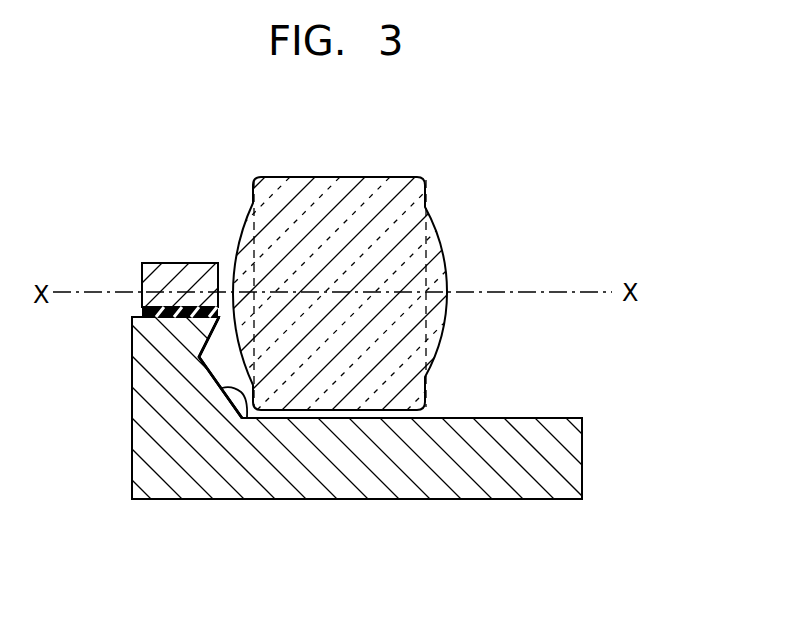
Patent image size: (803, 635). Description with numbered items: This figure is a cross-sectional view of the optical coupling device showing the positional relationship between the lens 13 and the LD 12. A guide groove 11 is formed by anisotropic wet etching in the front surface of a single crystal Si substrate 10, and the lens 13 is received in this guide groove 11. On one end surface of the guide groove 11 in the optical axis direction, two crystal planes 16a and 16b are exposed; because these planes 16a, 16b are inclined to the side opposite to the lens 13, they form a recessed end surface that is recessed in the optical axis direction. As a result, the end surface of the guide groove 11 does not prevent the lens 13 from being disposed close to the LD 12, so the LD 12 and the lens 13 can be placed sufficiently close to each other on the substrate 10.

The single crystal Si substrate 10 is at (565, 472).
The guide groove 11 is at (460, 400).
The LD 12 is at (171, 262).
The lens 13 is at (347, 177).
The {111} plane 16a is at (205, 350).
The {111} plane 16b is at (246, 410).